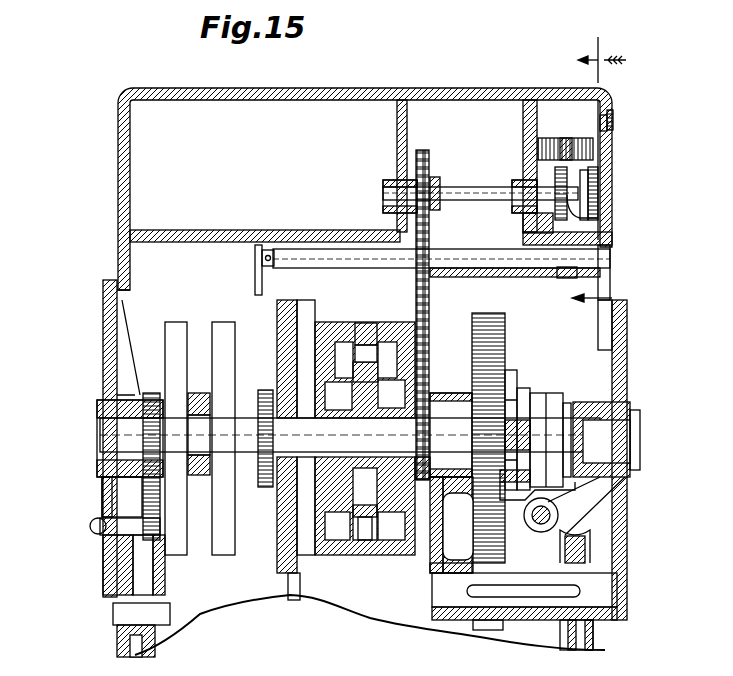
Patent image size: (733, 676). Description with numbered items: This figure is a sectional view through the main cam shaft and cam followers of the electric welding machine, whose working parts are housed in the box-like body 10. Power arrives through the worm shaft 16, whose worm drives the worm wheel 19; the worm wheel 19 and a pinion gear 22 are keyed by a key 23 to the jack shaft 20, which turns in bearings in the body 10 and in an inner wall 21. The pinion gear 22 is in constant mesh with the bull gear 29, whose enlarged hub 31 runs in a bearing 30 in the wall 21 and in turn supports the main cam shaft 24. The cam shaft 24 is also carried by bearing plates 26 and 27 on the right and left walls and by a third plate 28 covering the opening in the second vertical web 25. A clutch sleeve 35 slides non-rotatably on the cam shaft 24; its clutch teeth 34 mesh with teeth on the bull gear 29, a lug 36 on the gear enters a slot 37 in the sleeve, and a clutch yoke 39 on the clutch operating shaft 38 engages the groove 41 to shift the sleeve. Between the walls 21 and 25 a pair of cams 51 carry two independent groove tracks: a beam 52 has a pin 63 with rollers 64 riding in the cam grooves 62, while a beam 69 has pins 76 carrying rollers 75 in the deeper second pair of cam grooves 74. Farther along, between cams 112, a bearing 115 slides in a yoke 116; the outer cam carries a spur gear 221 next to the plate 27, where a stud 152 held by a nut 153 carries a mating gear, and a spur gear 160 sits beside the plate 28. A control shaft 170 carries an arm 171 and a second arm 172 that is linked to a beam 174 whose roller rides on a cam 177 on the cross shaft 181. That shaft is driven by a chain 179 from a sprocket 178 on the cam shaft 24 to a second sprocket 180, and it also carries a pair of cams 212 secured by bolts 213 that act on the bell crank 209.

The body portion 10 is at (118, 210).
The worm shaft 16 is at (575, 176).
The worm wheel 19 is at (580, 547).
The jack shaft 20 is at (612, 592).
The inner wall 21 is at (434, 500).
The pinion gear 22 is at (488, 620).
The key 23 is at (540, 585).
The main cam shaft 24 is at (350, 435).
The second vertical web 25 is at (300, 600).
The bearing plate 26 is at (622, 345).
The bearing plate 27 is at (105, 332).
The third plate 28 is at (278, 558).
The bull gear 29 is at (487, 313).
The bearing 30 is at (460, 493).
The enlarged hub 31 is at (451, 435).
The clutch teeth 34 is at (512, 395).
The clutch sleeve 35 is at (548, 400).
The lug 36 is at (521, 395).
The slot 37 is at (530, 420).
The clutch operating shaft 38 is at (556, 515).
The clutch yoke 39 is at (565, 492).
The groove 41 is at (590, 396).
The cams 51 is at (346, 542).
The beam 52 is at (366, 345).
The cam grooves 62 is at (343, 342).
The pin 63 is at (360, 362).
The rollers 64 is at (388, 342).
The beam 69 is at (366, 545).
The second pair of cam grooves 74 is at (338, 392).
The rollers 75 is at (332, 552).
The pins 76 is at (368, 545).
The cams 112 is at (182, 556).
The bearing 115 is at (150, 393).
The yoke 116 is at (198, 393).
The stud 152 is at (108, 532).
The nut 153 is at (107, 520).
The spur gear 160 is at (266, 488).
The control shaft 170 is at (320, 249).
The arm 171 is at (258, 275).
The second arm 172 is at (557, 273).
The beam 174 is at (560, 140).
The cam 177 is at (553, 180).
The sprocket 178 is at (424, 480).
The chain 179 is at (416, 237).
The second sprocket 180 is at (436, 177).
The cross shaft 181 is at (470, 187).
The bell crank 209 is at (595, 160).
The cams 212 is at (597, 200).
The bolts 213 is at (597, 180).
The spur gear 221 is at (140, 398).